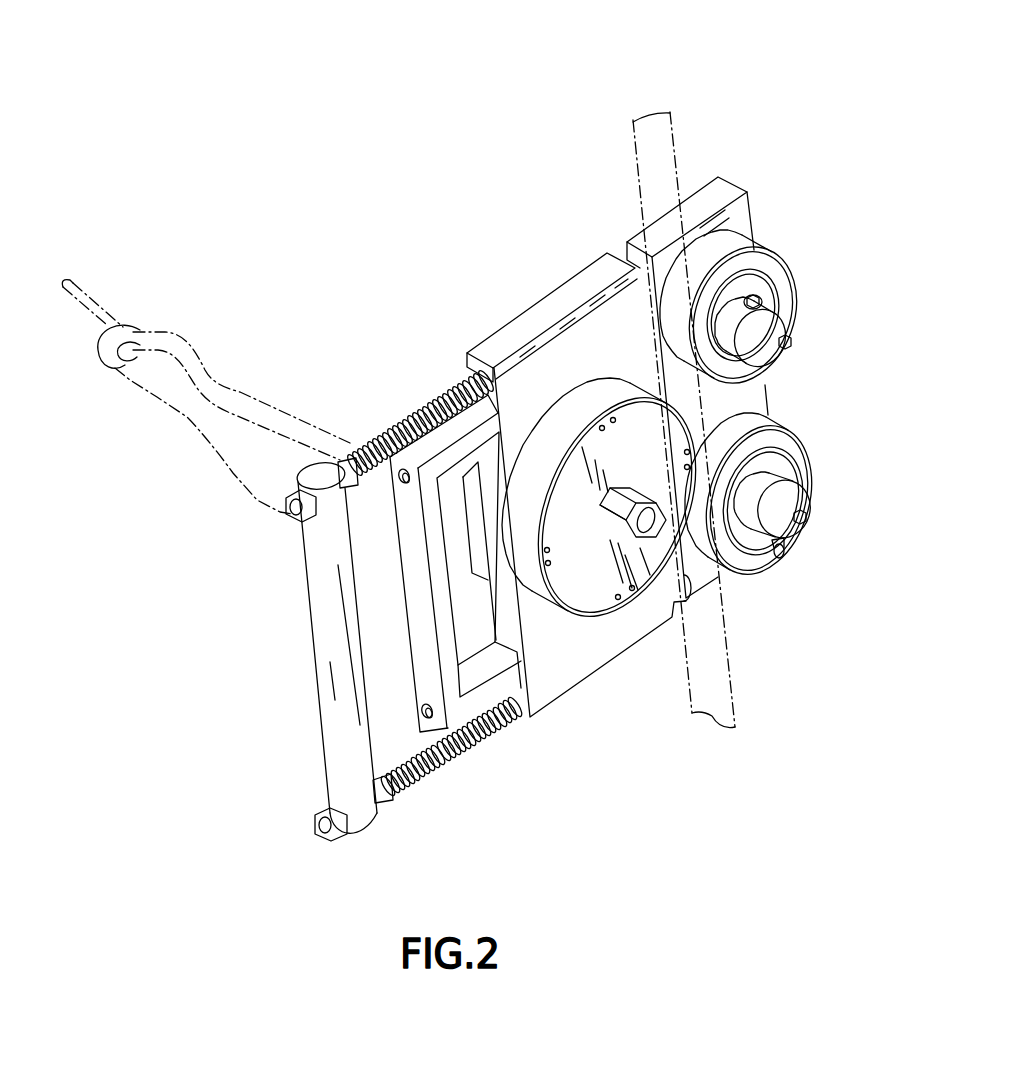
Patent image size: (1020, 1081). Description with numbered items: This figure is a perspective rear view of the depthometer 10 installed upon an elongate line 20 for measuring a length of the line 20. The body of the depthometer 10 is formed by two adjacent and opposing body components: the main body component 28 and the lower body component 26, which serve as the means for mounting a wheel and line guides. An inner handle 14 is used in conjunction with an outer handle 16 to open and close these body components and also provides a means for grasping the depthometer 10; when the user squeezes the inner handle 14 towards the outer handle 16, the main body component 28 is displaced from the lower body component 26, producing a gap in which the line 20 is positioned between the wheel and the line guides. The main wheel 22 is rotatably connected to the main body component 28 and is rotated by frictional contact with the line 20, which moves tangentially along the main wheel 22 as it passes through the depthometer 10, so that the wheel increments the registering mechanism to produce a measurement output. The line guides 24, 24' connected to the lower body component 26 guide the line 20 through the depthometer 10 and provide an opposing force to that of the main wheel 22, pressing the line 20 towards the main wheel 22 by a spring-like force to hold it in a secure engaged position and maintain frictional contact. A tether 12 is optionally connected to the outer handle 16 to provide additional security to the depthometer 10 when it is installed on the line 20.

The depthometer 10 is at (796, 92).
The tether 12 is at (240, 385).
The inner handle 14 is at (425, 668).
The outer handle 16 is at (318, 583).
The line 20 is at (675, 145).
The main wheel 22 is at (587, 412).
The line guide 24 is at (753, 314).
The line guide 24' is at (777, 500).
The lower body component 26 is at (740, 202).
The main body component 28 is at (518, 358).